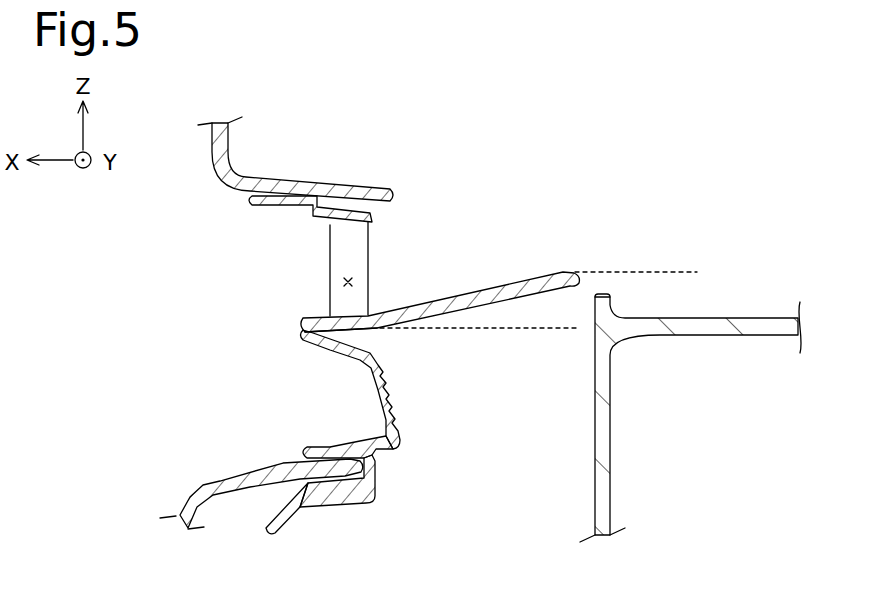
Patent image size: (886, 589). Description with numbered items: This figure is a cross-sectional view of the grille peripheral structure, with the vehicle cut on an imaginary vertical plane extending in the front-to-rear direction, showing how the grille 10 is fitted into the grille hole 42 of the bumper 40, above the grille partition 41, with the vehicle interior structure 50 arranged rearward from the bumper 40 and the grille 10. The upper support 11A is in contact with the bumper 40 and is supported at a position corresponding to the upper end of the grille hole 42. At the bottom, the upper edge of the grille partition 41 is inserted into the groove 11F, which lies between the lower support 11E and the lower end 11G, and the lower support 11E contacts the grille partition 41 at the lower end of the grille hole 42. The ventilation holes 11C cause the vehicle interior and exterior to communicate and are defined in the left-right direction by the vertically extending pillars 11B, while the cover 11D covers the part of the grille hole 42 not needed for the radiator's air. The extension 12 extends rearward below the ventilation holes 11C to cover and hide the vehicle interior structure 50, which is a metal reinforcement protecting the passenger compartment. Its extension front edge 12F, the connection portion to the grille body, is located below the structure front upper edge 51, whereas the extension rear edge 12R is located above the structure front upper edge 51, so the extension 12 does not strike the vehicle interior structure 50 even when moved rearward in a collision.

The grille 10 is at (422, 363).
The upper support 11A is at (262, 203).
The pillars 11B is at (347, 248).
The ventilation holes 11C is at (343, 282).
The cover 11D is at (383, 392).
The lower support 11E is at (320, 448).
The groove 11F is at (357, 485).
The lower end 11G is at (268, 534).
The extension 12 is at (478, 290).
The extension front edge 12F is at (391, 337).
The extension rear edge 12R is at (584, 268).
The bumper 40 is at (235, 165).
The grille partition 41 is at (232, 485).
The grille hole 42 is at (172, 351).
The vehicle interior structure 50 is at (775, 303).
The structure front upper edge 51 is at (616, 288).